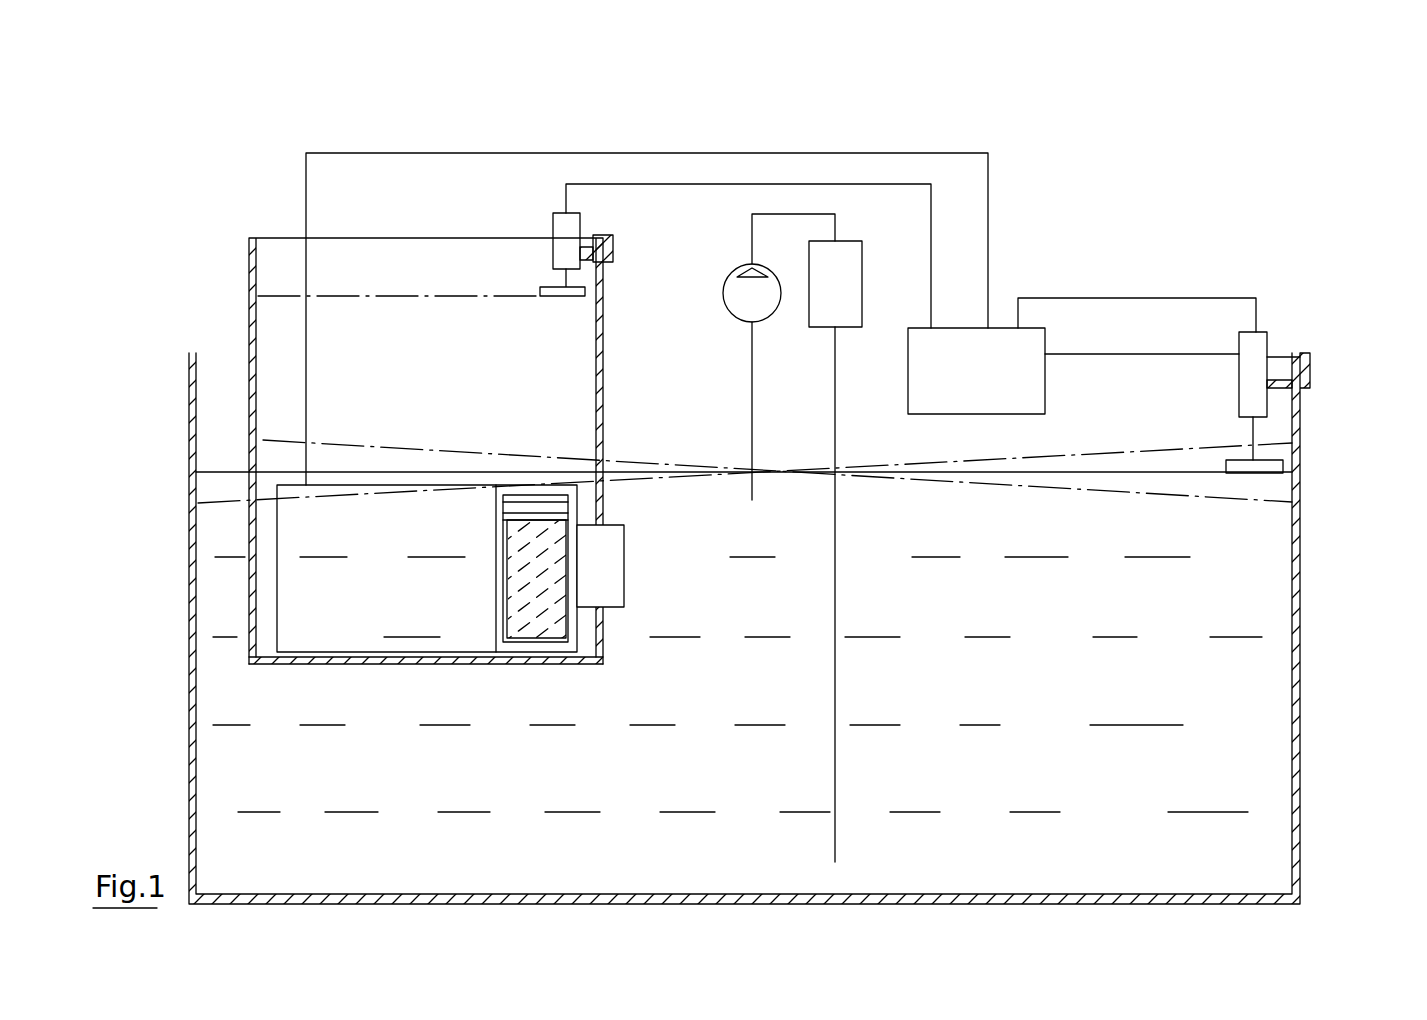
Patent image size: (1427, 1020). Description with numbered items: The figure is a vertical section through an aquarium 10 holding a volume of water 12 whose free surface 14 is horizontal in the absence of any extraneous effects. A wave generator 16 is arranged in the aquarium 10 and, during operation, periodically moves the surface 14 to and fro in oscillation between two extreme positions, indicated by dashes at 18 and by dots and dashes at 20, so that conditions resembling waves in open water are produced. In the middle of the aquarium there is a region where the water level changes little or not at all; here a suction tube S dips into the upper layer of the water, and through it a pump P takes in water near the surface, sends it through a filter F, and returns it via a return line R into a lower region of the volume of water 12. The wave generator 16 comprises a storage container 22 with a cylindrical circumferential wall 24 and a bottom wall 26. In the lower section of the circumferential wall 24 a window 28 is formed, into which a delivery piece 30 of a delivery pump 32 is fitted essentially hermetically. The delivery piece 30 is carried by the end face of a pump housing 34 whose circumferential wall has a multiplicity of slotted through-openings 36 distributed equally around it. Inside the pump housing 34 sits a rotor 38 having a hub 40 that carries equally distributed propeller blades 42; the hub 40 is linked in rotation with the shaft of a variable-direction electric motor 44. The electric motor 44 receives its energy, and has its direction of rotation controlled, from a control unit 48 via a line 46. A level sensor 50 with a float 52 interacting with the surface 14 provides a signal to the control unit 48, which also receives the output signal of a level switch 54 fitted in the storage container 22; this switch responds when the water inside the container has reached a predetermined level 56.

The aquarium 10 is at (1302, 756).
The volume of water 12 is at (1146, 697).
The free surface 14 is at (1062, 473).
The wave generator 16 is at (222, 253).
The extreme position 18 is at (1123, 450).
The extreme position 20 is at (988, 484).
The storage container 22 is at (247, 567).
The circumferential wall 24 is at (249, 418).
The bottom wall 26 is at (288, 657).
The window 28 is at (620, 602).
The delivery piece 30 is at (612, 556).
The delivery pump 32 is at (420, 590).
The pump housing 34 is at (612, 477).
The slotted through-openings 36 is at (530, 498).
The rotor 38 is at (518, 597).
The hub 40 is at (503, 577).
The propeller blades 42 is at (547, 622).
The variable-direction electric motor 44 is at (336, 604).
The line 46 is at (402, 155).
The control unit 48 is at (960, 388).
The level sensor 50 is at (1268, 331).
The float 52 is at (1243, 467).
The level switch 54 is at (553, 252).
The predetermined level 56 is at (436, 293).
The pump P is at (735, 307).
The filter F is at (848, 278).
The suction tube S is at (747, 387).
The return line R is at (834, 428).